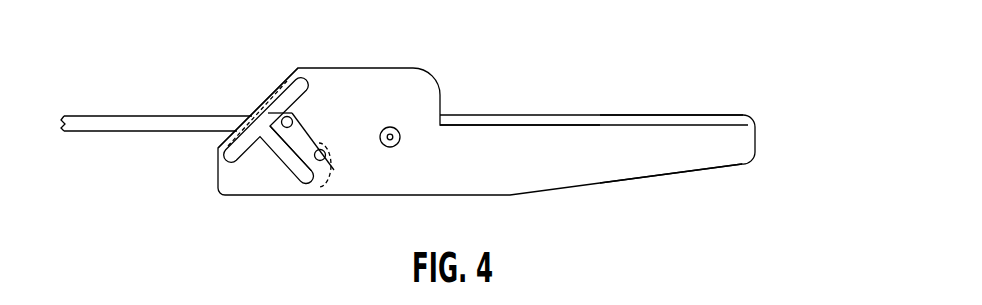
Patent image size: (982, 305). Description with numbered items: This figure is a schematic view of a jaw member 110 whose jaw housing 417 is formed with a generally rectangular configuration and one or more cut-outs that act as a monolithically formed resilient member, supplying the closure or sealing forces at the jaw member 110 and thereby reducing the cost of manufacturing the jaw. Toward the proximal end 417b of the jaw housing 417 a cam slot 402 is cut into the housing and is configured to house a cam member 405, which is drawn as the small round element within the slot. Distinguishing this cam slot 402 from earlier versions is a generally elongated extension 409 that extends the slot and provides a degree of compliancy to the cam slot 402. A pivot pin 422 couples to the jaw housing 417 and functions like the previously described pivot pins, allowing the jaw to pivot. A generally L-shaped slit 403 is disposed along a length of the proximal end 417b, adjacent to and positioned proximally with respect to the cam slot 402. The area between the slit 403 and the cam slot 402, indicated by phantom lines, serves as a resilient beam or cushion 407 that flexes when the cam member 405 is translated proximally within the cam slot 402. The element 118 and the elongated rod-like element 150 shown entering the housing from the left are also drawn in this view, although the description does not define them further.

The jaw member 110 is at (645, 67).
The top surface 118 is at (717, 113).
The rod 150 is at (148, 115).
The cam slot 402 is at (303, 157).
The slit 403 is at (280, 167).
The cam member 405 is at (287, 112).
The resilient beam or cushion 407 is at (270, 113).
The elongated extension 409 is at (303, 132).
The jaw housing 417 is at (718, 165).
The proximal end 417b is at (306, 66).
The pivot pin 422 is at (402, 137).